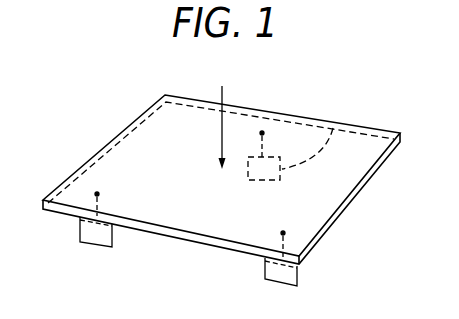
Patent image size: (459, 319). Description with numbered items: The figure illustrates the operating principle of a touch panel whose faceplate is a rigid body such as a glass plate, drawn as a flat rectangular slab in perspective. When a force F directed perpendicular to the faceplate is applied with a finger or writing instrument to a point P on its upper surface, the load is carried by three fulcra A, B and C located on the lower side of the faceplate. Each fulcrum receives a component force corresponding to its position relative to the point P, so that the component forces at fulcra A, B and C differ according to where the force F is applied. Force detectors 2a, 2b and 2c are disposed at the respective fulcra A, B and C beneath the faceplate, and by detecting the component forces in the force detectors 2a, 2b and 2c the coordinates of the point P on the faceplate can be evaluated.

The force detector 2a is at (333, 128).
The force detector 2b is at (114, 237).
The force detector 2c is at (302, 277).
The fulcrum A is at (279, 136).
The fulcrum B is at (86, 189).
The fulcrum C is at (300, 236).
The force F is at (229, 127).
The point P is at (212, 167).